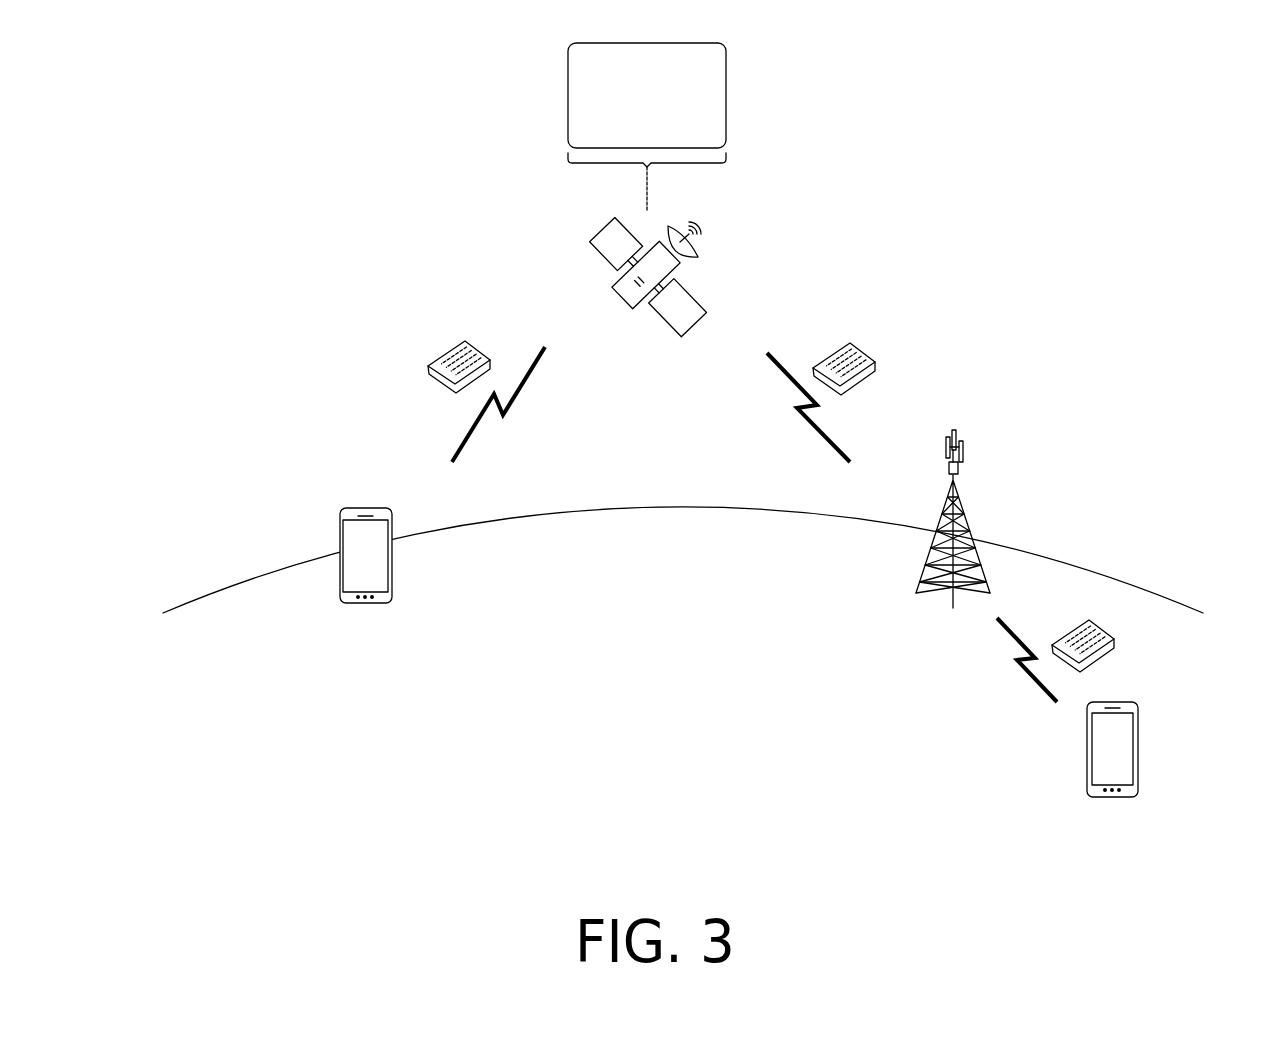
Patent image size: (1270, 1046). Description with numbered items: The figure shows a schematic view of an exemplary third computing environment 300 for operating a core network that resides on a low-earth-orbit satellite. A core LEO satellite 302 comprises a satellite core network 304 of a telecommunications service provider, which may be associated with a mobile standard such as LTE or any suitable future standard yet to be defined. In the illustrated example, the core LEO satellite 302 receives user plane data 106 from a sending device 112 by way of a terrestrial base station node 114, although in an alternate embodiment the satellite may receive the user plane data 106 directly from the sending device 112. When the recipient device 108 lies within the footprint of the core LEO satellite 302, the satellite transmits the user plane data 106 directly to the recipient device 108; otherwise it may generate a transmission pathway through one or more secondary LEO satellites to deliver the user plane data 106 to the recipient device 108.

The third computing environment 300 is at (1158, 124).
The satellite core network 304 is at (647, 126).
The core LEO satellite 302 is at (693, 292).
The user plane data 106 is at (452, 352).
The terrestrial base station node 114 is at (965, 522).
The recipient device 108 is at (365, 603).
The sending device 112 is at (1115, 797).